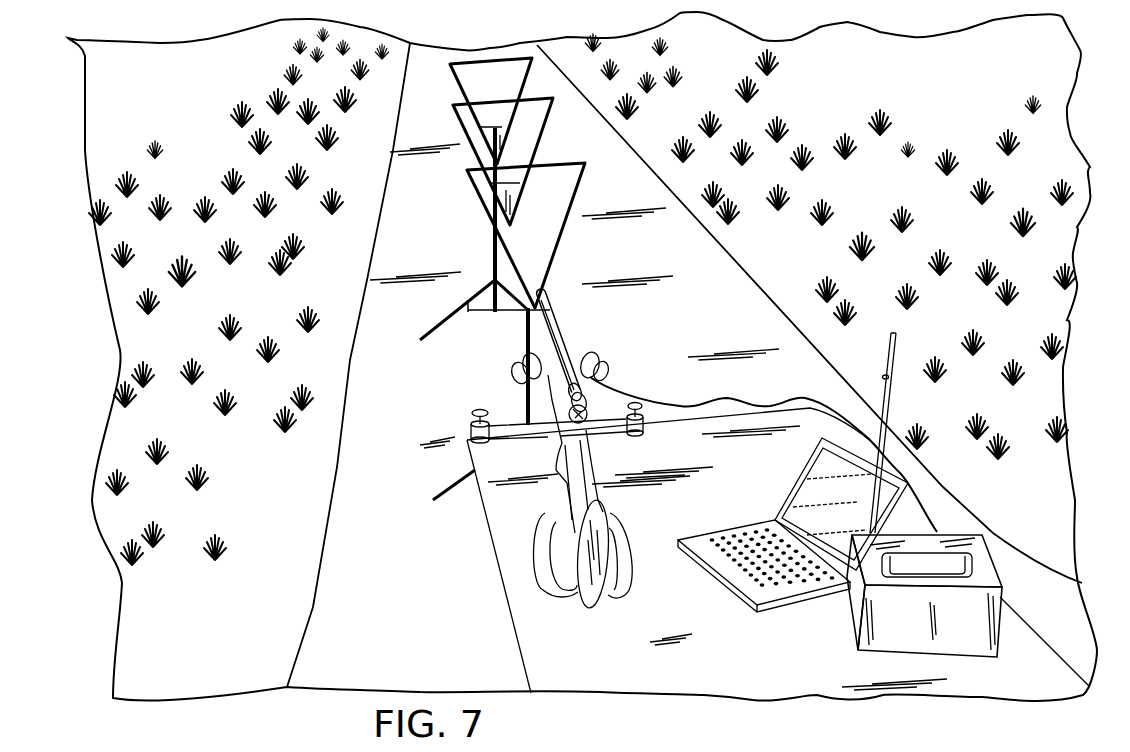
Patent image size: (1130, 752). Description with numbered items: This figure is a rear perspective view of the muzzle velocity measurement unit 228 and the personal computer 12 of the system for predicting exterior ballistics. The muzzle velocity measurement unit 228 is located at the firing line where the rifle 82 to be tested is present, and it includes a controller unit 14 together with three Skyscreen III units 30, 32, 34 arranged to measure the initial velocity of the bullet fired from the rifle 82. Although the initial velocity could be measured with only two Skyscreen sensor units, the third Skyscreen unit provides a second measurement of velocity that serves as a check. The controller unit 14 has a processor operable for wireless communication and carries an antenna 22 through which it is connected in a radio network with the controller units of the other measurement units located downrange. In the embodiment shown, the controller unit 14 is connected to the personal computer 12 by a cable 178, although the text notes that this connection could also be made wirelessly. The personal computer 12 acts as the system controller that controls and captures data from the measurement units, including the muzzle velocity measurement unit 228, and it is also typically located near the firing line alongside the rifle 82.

The muzzle velocity measurement unit 228 is at (562, 47).
The Skyscreen III unit 34 is at (489, 60).
The Skyscreen III unit 32 is at (546, 118).
The Skyscreen III unit 30 is at (578, 185).
The cable 178 is at (643, 398).
The rifle 82 is at (562, 444).
The personal computer 12 is at (742, 598).
The controller unit 14 is at (993, 608).
The antenna 22 is at (883, 448).